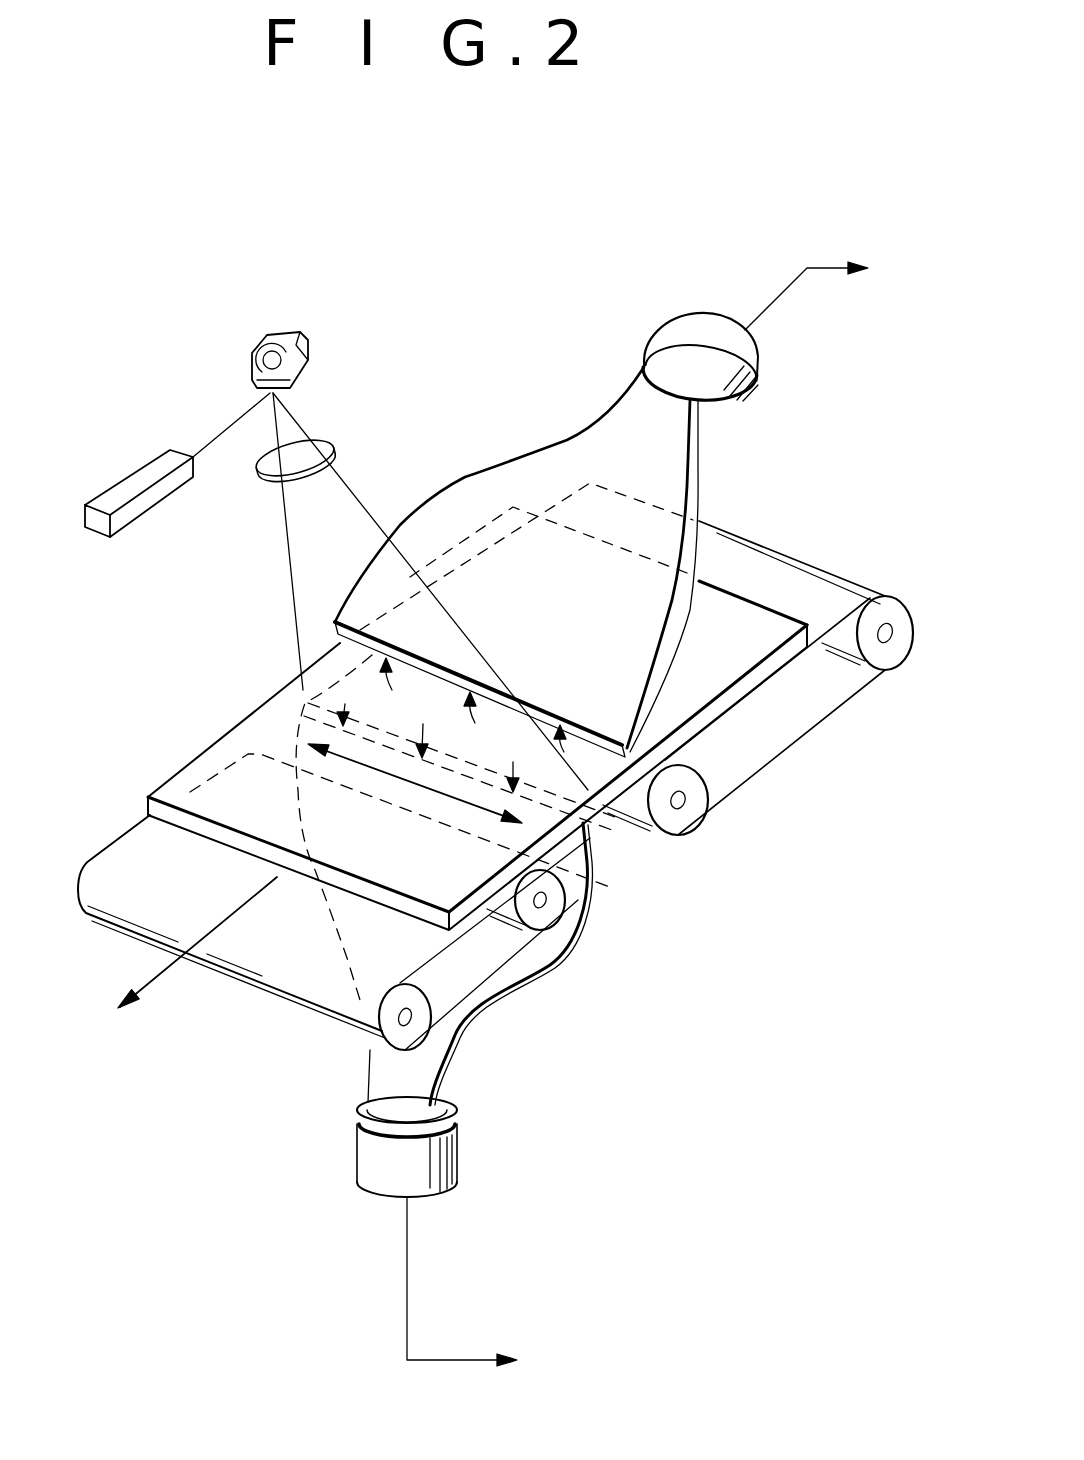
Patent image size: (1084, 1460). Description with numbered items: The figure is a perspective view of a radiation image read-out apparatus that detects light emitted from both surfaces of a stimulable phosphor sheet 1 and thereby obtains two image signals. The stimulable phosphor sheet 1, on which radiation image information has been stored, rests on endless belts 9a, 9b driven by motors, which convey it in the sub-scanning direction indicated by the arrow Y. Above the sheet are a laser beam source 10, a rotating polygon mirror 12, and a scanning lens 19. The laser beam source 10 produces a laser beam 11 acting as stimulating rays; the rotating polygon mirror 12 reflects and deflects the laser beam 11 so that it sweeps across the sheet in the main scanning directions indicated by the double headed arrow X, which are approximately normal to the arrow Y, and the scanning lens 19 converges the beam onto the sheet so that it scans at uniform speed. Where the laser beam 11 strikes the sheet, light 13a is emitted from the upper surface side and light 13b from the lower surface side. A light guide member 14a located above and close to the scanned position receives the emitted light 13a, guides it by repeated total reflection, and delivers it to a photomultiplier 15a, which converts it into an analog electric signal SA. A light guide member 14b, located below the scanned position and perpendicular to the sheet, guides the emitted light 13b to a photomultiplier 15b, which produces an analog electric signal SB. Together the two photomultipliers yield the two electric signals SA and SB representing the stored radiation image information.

The stimulable phosphor sheet 1 is at (250, 717).
The endless belt 9a is at (790, 747).
The endless belt 9b is at (110, 850).
The laser beam source 10 is at (170, 450).
The laser beam 11 is at (380, 517).
The rotating polygon mirror 12 is at (305, 330).
The light emitted from the upper surface side 13a is at (392, 690).
The light emitted from the lower surface side 13b is at (513, 762).
The light guide member 14a is at (542, 443).
The light guide member 14b is at (590, 923).
The photomultiplier 15a is at (668, 326).
The photomultiplier 15b is at (457, 1167).
The scanning lens 19 is at (258, 467).
The analog electric signal SA is at (795, 266).
The analog electric signal SB is at (463, 1360).
The main scanning directions X is at (457, 807).
The sub-scanning direction Y is at (163, 980).